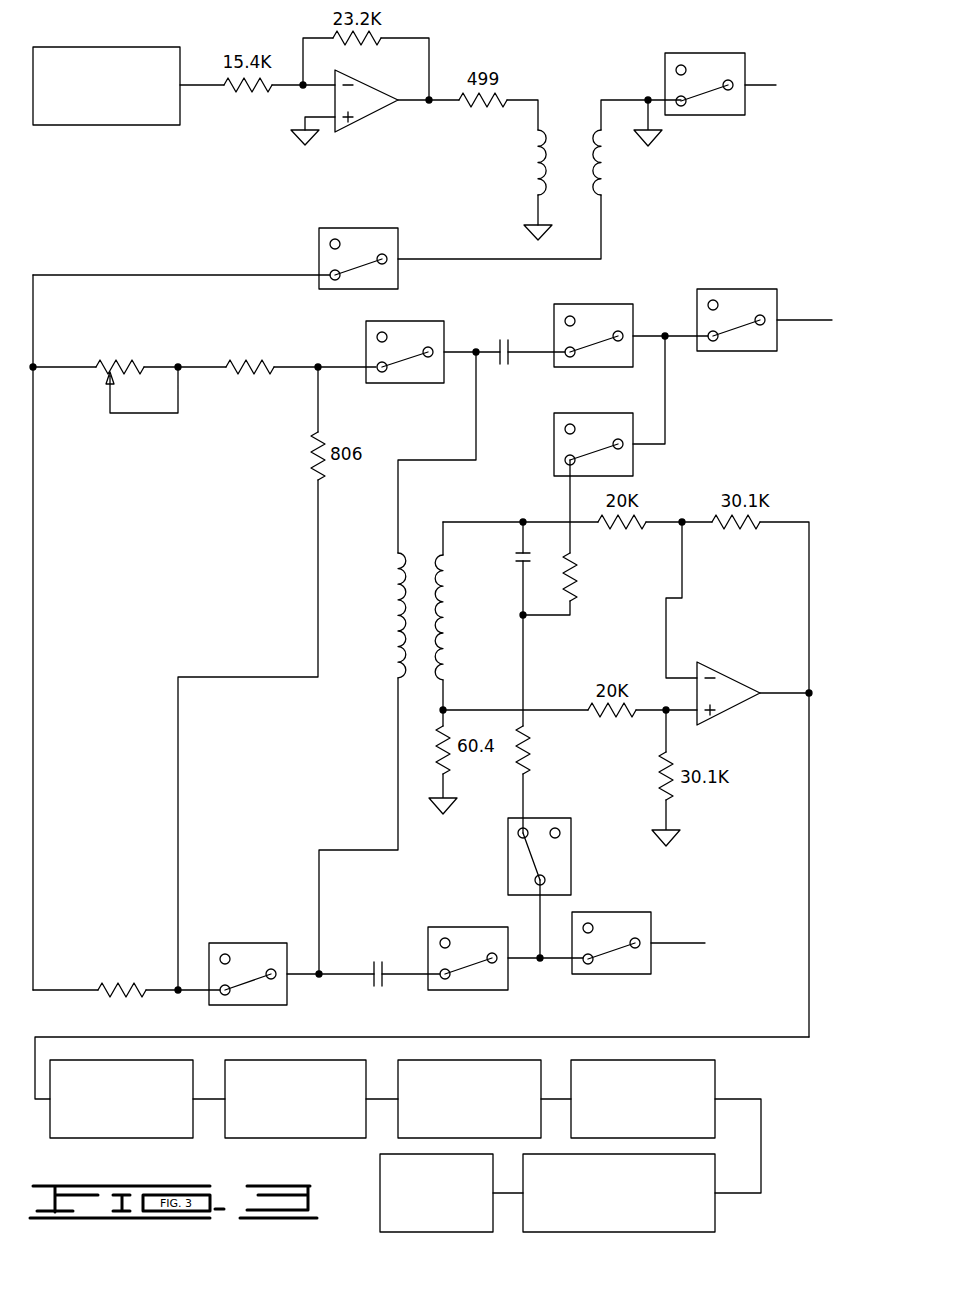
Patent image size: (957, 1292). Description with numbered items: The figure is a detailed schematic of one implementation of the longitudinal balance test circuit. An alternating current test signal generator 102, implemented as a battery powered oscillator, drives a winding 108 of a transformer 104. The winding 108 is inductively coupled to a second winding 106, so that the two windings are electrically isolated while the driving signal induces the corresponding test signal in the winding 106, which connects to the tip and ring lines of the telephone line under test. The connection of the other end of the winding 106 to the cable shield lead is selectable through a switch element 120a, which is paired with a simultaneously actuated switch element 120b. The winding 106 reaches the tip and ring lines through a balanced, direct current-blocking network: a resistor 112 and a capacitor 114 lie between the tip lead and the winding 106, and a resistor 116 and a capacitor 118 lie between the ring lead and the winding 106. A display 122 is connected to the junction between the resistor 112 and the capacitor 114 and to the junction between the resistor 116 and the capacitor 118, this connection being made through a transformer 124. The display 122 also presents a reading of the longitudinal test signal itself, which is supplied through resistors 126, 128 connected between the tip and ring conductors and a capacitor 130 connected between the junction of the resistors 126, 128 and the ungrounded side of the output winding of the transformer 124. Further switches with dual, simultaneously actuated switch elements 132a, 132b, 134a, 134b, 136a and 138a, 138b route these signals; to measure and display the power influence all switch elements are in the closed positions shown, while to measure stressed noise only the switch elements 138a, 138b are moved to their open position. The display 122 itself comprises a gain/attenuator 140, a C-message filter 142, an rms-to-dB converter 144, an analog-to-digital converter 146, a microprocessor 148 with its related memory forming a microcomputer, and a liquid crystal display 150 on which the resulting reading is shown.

The alternating current test signal generator 102 is at (105, 125).
The transformer 104 is at (540, 178).
The winding 106 is at (605, 165).
The winding 108 is at (535, 160).
The resistor 112 is at (210, 402).
The capacitor 114 is at (493, 362).
The resistor 116 is at (124, 998).
The capacitor 118 is at (363, 985).
The switch element 120a is at (700, 117).
The switch element 120b is at (350, 228).
The display 122 is at (422, 1126).
The transformer 124 is at (389, 662).
The resistor 126 is at (580, 570).
The resistor 128 is at (525, 762).
The capacitor 130 is at (521, 565).
The switch element 132a is at (410, 321).
The switch element 132b is at (227, 943).
The switch element 134a is at (728, 289).
The switch element 134b is at (623, 975).
The switch element 136a is at (590, 304).
The switch element 138a is at (573, 413).
The switch element 138b is at (573, 862).
The gain/attenuator 140 is at (135, 1138).
The C-message filter 142 is at (268, 1138).
The rms-to-dB converter 144 is at (472, 1037).
The analog-to-digital converter 146 is at (715, 1082).
The microprocessor 148 is at (715, 1208).
The LCD display 150 is at (383, 1212).